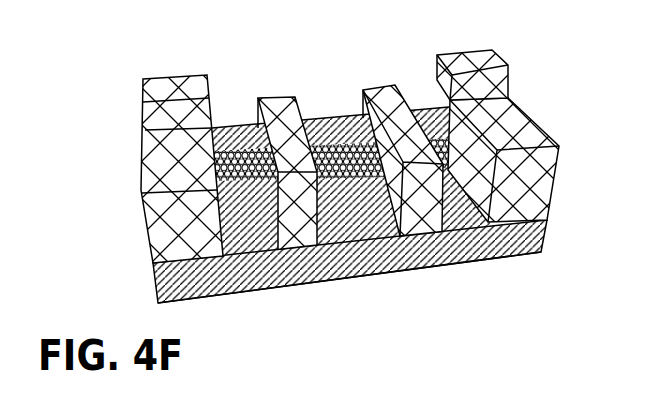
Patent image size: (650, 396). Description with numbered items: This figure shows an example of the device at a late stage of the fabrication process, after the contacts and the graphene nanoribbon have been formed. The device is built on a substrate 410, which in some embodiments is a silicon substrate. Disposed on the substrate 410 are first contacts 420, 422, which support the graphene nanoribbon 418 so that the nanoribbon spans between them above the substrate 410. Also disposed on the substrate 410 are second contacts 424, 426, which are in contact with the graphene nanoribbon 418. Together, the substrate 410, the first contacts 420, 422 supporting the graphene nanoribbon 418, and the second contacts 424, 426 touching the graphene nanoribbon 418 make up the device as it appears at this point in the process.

The substrate 410 is at (373, 275).
The graphene nanoribbon 418 is at (334, 121).
The first contact 420 is at (532, 112).
The first contact 422 is at (160, 221).
The second contact 424 is at (300, 284).
The second contact 426 is at (420, 231).